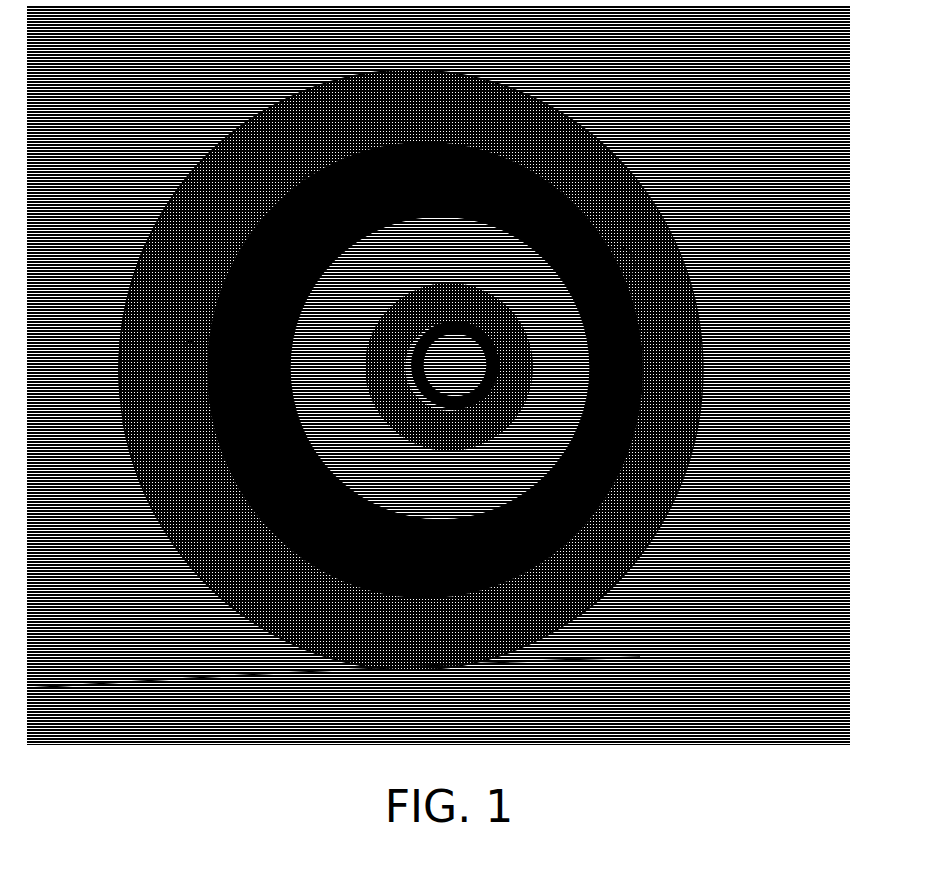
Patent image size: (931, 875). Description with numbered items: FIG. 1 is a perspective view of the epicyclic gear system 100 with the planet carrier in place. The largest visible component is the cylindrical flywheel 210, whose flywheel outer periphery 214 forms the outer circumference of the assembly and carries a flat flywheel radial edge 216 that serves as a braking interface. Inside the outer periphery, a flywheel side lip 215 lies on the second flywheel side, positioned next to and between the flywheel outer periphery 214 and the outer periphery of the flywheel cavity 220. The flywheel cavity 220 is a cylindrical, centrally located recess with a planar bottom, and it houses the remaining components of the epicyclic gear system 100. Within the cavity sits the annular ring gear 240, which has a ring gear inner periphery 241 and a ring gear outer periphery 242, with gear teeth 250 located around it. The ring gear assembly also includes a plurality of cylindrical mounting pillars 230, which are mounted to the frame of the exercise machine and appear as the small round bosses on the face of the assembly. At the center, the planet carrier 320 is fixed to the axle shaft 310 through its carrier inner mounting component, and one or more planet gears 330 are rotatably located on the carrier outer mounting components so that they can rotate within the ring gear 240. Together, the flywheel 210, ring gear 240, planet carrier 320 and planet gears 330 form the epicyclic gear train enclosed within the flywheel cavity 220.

The epicyclic gear system 100 is at (650, 128).
The cylindrical flywheel 210 is at (238, 130).
The flywheel outer periphery 214 is at (152, 230).
The flywheel side lip 215 is at (230, 213).
The flywheel radial edge 216 is at (150, 300).
The flywheel cavity 220 is at (325, 140).
The mounting pillars 230 is at (193, 575).
The ring gear 240 is at (595, 522).
The ring gear inner periphery 241 is at (157, 395).
The ring gear outer periphery 242 is at (190, 345).
The gear teeth 250 is at (142, 472).
The axle shaft 310 is at (490, 365).
The planet carrier 320 is at (545, 323).
The planet gears 330 is at (487, 127).